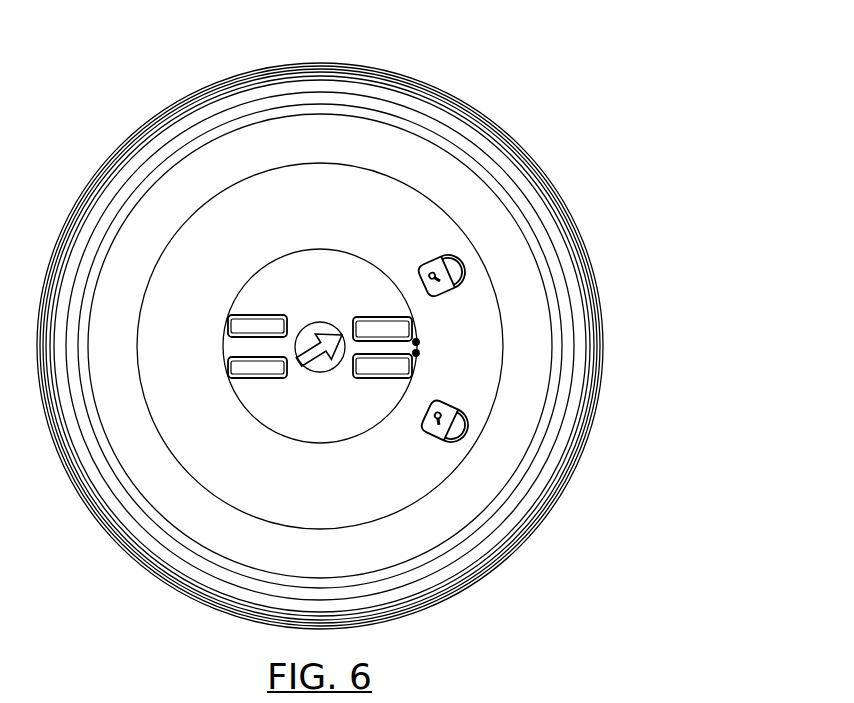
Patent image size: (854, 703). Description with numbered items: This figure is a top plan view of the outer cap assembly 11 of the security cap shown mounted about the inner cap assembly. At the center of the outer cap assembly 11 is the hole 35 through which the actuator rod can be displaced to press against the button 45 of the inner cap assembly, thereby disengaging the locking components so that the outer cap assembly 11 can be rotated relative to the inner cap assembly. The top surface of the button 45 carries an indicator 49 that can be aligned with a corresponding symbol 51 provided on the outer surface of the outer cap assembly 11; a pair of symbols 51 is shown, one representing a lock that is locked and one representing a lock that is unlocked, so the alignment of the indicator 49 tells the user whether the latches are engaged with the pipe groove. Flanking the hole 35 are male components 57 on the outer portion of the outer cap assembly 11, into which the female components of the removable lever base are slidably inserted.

The outer cap assembly 11 is at (607, 82).
The hole 35 is at (293, 348).
The button 45 is at (307, 375).
The indicator 49 is at (330, 363).
The male component 57 is at (377, 313).
The symbol 51 is at (470, 400).